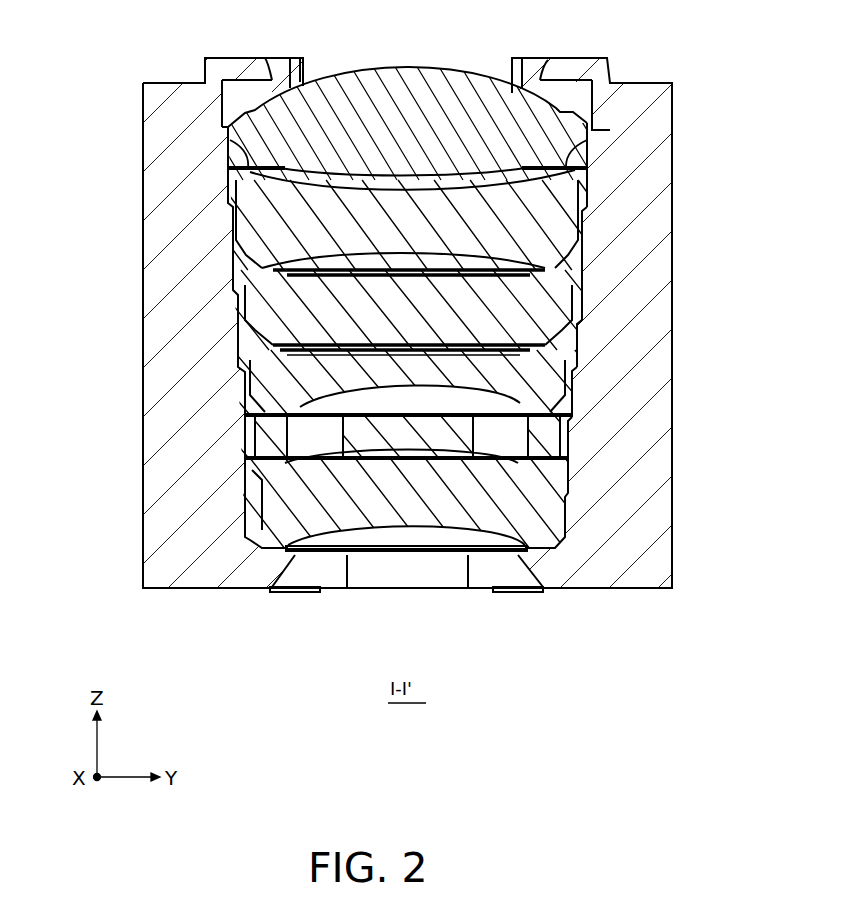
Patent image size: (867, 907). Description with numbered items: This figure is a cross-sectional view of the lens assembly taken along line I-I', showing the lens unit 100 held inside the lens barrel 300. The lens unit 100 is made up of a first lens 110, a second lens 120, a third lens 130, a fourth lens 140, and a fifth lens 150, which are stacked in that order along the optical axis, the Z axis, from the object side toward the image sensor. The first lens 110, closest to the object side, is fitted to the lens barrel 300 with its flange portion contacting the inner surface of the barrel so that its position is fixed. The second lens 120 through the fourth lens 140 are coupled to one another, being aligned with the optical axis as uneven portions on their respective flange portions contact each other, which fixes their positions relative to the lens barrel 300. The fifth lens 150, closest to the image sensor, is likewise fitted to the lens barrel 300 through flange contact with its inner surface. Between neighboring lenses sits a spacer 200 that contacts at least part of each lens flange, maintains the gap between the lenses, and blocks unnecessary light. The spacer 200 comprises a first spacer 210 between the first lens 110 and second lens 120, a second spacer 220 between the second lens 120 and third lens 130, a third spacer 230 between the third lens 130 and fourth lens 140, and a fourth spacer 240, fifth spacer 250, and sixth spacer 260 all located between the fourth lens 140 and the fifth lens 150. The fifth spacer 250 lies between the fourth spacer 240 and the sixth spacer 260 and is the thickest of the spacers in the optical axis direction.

The lens unit 100 is at (480, 323).
The first lens 110 is at (560, 137).
The second lens 120 is at (560, 222).
The third lens 130 is at (547, 303).
The fourth lens 140 is at (540, 380).
The fifth lens 150 is at (639, 482).
The spacer 200 is at (297, 313).
The first spacer 210 is at (230, 155).
The second spacer 220 is at (240, 253).
The third spacer 230 is at (245, 322).
The fourth spacer 240 is at (250, 395).
The fifth spacer 250 is at (250, 437).
The sixth spacer 260 is at (298, 514).
The lens barrel 300 is at (252, 577).